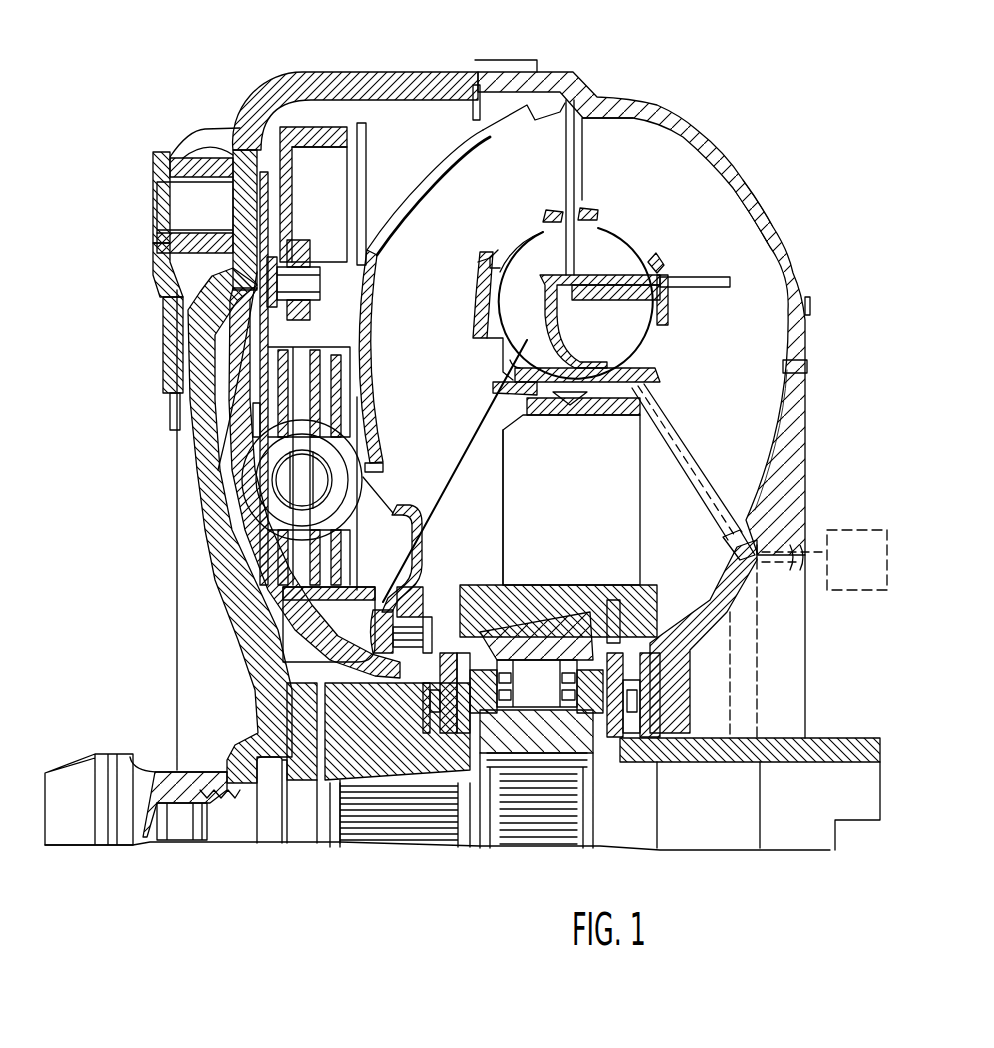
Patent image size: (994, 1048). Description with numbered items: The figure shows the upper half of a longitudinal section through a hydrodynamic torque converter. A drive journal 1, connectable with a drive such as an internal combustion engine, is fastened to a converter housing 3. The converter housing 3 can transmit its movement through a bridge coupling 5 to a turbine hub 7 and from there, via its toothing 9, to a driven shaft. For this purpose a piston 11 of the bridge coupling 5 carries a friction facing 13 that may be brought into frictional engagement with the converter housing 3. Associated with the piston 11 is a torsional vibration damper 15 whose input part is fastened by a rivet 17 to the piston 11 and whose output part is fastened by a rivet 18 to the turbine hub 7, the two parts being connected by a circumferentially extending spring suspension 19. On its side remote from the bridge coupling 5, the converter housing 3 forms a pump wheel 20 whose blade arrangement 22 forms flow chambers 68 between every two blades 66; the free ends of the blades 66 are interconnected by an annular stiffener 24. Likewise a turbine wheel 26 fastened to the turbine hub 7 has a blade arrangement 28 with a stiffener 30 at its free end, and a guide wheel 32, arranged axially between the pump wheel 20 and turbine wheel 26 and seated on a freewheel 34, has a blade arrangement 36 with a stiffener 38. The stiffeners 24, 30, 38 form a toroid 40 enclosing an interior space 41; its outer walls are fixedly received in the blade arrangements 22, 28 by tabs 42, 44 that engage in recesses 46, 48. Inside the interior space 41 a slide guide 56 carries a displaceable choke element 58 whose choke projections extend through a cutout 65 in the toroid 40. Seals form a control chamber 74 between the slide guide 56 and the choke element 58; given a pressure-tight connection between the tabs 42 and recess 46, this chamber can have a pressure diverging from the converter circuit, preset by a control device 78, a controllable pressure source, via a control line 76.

The drive journal 1 is at (80, 770).
The converter housing 3 is at (215, 572).
The bridge coupling 5 is at (330, 230).
The turbine hub 7 is at (445, 752).
The toothing 9 is at (383, 765).
The piston 11 is at (313, 137).
The friction facing 13 is at (287, 190).
The torsional vibration damper 15 is at (232, 506).
The rivet 17 is at (313, 281).
The rivet 18 is at (366, 628).
The spring suspension 19 is at (262, 477).
The pump wheel 20 is at (760, 378).
The blade arrangement 22 is at (727, 202).
The annular stiffener 24 is at (604, 309).
The turbine wheel 26 is at (508, 140).
The blade arrangement 28 is at (460, 190).
The stiffener 30 is at (480, 262).
The guide wheel 32 is at (527, 493).
The freewheel 34 is at (550, 620).
The blade arrangement 36 is at (503, 545).
The stiffener 38 is at (582, 405).
The toroid 40 is at (607, 205).
The interior space 41 is at (475, 316).
The tab 42 is at (628, 237).
The tab 44 is at (525, 235).
The recess 46 is at (660, 258).
The recess 48 is at (556, 207).
The slide guide 56 is at (627, 364).
The choke element 58 is at (732, 263).
The cutout 65 is at (668, 292).
The blade 66 is at (730, 217).
The flow chamber 68 is at (760, 418).
The control chamber 74 is at (545, 322).
The control line 76 is at (712, 500).
The control device 78 is at (852, 588).